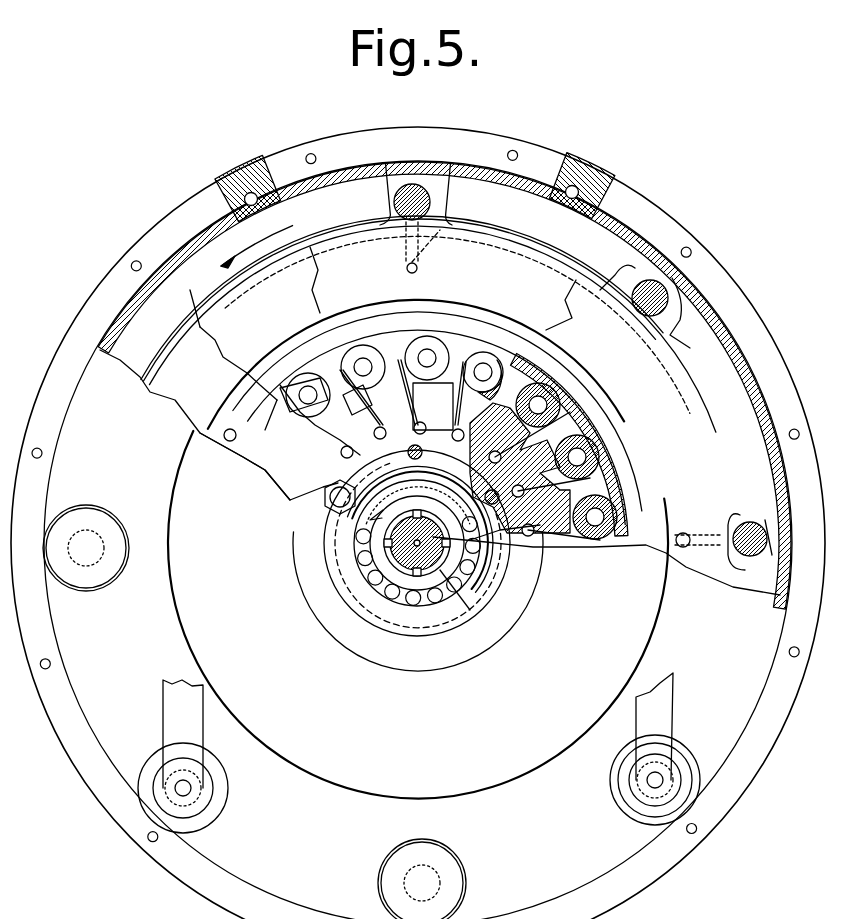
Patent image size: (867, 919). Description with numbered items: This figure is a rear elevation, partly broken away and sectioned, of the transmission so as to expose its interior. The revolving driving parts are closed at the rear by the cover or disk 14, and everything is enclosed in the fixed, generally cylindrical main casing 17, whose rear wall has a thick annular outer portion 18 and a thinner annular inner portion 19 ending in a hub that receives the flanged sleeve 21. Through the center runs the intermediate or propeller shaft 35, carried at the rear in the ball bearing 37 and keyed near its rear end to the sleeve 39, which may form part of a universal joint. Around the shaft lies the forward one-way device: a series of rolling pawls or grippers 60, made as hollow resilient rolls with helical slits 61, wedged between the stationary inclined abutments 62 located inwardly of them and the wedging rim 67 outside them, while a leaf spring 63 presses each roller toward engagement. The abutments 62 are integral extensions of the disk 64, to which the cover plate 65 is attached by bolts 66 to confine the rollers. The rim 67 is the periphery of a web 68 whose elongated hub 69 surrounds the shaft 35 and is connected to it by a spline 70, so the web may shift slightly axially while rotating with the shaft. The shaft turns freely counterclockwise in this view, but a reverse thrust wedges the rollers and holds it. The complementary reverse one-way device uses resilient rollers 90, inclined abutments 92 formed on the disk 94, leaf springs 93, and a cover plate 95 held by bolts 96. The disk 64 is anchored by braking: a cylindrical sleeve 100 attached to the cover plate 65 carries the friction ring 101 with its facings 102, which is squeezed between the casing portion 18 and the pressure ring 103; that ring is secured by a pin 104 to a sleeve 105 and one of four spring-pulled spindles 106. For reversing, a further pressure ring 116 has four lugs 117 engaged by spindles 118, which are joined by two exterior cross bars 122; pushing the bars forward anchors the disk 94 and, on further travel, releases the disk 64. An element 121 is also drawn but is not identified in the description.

The cover disk 14 is at (722, 343).
The main casing 17 is at (200, 228).
The annular outer portion 18 is at (418, 523).
The annular inner portion 19 is at (418, 614).
The flanged sleeve 21 is at (405, 650).
The intermediate shaft 35 is at (423, 570).
The ball bearing 37 is at (375, 585).
The sleeve 39 is at (402, 585).
The rolling pawls 60 is at (364, 355).
The helical slits 61 is at (304, 383).
The wedging abutments 62 is at (366, 408).
The leaf spring 63 is at (486, 352).
The disk 64 is at (396, 464).
The cover plate 65 is at (300, 478).
The bolts 66 is at (465, 437).
The wedging rim 67 is at (340, 360).
The web 68 is at (440, 345).
The elongated hub 69 is at (475, 575).
The spline 70 is at (470, 610).
The resilient rollers 90 is at (600, 456).
The inclined abutments 92 is at (612, 510).
The leaf springs 93 is at (575, 440).
The disk 94 is at (510, 548).
The cover plate 95 is at (548, 377).
The bolts 96 is at (484, 494).
The cylindrical sleeve 100 is at (217, 450).
The friction ring 101 is at (226, 362).
The facings 102 is at (402, 312).
The pressure ring 103 is at (500, 256).
The pin 104 is at (452, 236).
The sleeve 105 is at (390, 200).
The spindle 106 is at (433, 180).
The pressure ring 116 is at (293, 327).
The lugs 117 is at (645, 285).
The spindles 118 is at (668, 300).
The boss 121 is at (152, 758).
The cross bars 122 is at (180, 725).